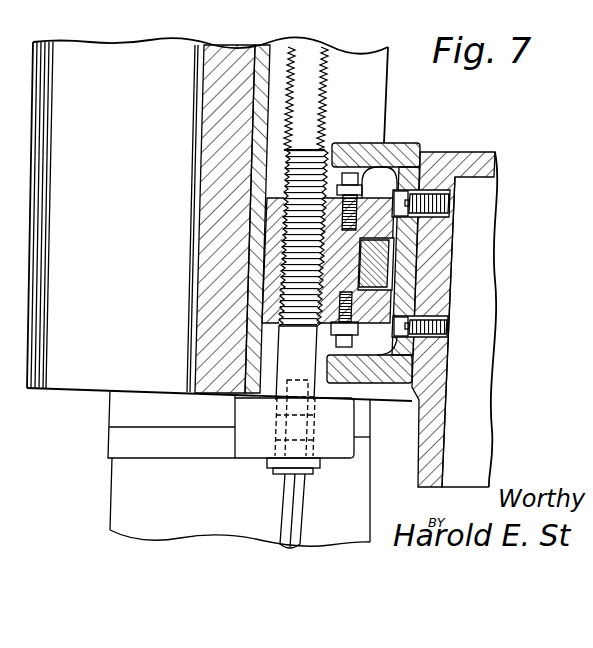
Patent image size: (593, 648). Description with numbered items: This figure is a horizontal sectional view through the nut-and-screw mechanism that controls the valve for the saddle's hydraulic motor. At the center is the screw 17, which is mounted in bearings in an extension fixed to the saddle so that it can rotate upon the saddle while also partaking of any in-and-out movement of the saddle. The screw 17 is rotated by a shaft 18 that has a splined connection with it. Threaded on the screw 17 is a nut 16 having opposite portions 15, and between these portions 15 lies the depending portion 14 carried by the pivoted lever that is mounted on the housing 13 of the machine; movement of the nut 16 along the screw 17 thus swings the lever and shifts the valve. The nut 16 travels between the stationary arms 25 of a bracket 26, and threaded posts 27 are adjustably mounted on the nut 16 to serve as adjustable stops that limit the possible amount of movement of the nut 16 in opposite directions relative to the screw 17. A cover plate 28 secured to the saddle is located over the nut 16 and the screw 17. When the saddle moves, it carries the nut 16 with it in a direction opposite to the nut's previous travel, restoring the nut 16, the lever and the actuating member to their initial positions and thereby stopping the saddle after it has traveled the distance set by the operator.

The housing 13 is at (488, 394).
The depending portion 14 is at (386, 257).
The opposite portions 15 is at (400, 298).
The nut 16 is at (273, 270).
The screw 17 is at (318, 130).
The shaft 18 is at (285, 493).
The stationary arms 25 is at (355, 143).
The bracket 26 is at (422, 153).
The threaded posts 27 is at (362, 172).
The cover plate 28 is at (223, 102).